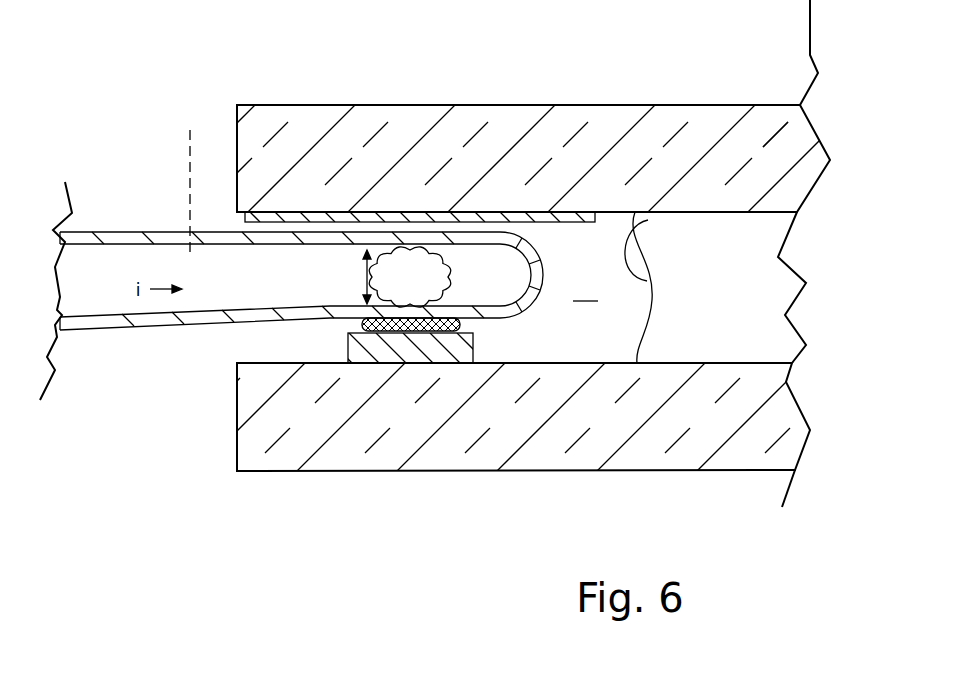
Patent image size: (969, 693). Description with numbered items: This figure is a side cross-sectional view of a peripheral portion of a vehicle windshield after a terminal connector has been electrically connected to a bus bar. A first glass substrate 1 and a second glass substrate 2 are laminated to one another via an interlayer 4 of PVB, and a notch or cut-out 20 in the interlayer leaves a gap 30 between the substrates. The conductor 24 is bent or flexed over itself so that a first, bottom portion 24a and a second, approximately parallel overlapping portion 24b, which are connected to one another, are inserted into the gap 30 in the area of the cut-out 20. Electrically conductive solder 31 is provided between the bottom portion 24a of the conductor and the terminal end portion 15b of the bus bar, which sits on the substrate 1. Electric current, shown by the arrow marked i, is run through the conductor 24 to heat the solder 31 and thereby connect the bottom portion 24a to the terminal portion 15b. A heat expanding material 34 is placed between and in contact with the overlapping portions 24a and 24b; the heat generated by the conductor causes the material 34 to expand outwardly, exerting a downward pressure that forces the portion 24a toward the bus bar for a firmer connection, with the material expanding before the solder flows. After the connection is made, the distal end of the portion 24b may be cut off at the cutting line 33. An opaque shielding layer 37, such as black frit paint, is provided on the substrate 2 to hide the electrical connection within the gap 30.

The substrate 1 is at (432, 455).
The substrate 2 is at (572, 121).
The interlayer 4 is at (767, 305).
The notch/cut-out 20 is at (650, 220).
The conductor 24 is at (301, 317).
The bottom portion of the conductor 24a is at (327, 318).
The second overlapping portion of the conductor 24b is at (332, 242).
The gap 30 is at (585, 290).
The electrically conductive solder 31 is at (360, 326).
The cutting line 33 is at (188, 176).
The heat expanding material 34 is at (442, 272).
The opaque shielding layer 37 is at (478, 217).
The terminal end portion of the bus bar 15b is at (473, 348).